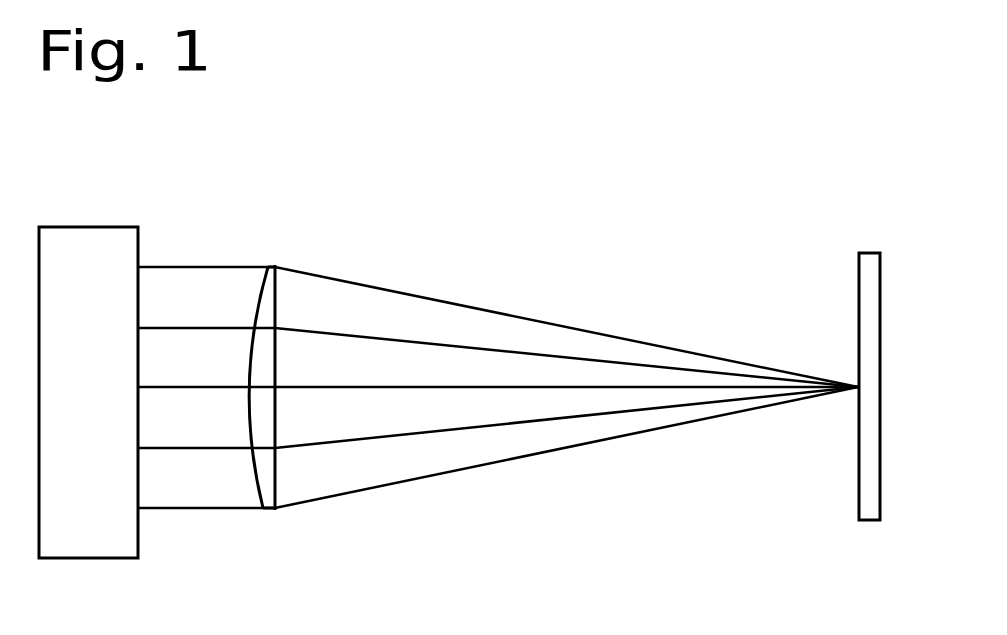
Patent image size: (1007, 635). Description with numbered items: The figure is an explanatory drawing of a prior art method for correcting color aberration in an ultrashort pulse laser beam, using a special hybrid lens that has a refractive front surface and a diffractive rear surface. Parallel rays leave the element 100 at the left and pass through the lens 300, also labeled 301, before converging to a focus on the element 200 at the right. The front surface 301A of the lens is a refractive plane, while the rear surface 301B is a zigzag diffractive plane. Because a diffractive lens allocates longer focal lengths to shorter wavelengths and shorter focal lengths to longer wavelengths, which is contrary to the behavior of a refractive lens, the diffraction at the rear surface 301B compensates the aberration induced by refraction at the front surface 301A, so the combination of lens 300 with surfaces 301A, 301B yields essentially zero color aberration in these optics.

The light source 100 is at (113, 227).
The image plane / detector 200 is at (870, 253).
The optical element (lens) 300 is at (306, 391).
The lens 301 is at (306, 438).
The front surface 301A is at (258, 487).
The rear surface 301B is at (278, 428).